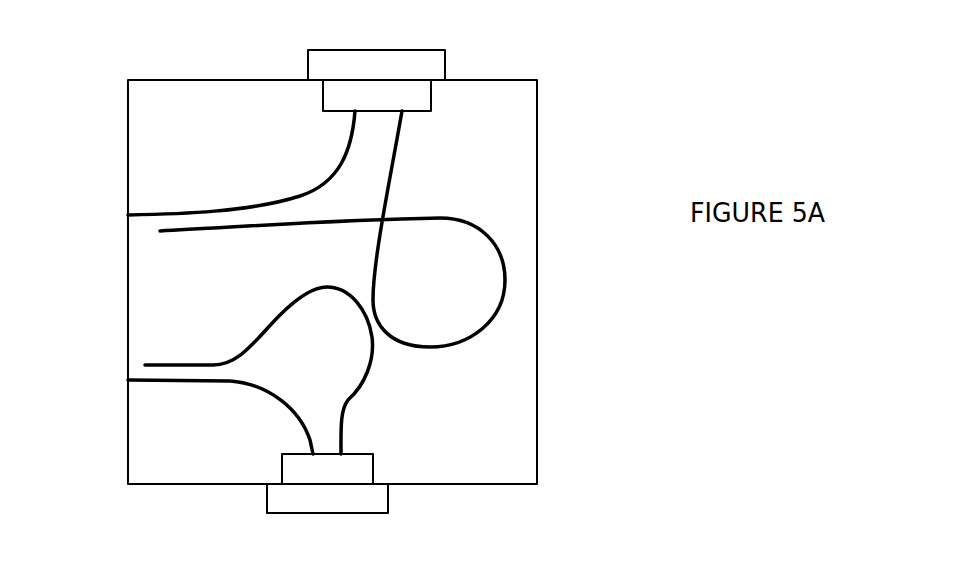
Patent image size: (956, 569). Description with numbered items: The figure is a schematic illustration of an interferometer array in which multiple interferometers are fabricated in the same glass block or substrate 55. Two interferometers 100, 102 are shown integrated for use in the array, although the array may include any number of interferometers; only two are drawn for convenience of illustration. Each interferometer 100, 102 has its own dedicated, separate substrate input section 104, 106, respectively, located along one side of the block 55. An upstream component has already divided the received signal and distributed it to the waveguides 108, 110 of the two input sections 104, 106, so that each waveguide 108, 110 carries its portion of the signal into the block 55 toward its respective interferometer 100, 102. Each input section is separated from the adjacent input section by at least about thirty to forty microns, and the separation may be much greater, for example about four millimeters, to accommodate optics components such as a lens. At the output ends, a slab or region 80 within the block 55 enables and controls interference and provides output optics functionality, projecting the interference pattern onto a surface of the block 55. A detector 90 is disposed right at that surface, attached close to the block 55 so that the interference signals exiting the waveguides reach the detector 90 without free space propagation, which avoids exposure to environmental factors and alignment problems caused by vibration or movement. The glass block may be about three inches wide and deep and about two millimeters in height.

The block 55 is at (540, 203).
The slab 80 is at (431, 97).
The detector 90 is at (355, 50).
The interferometer 100 is at (480, 150).
The interferometer 102 is at (455, 410).
The substrate input section 104 is at (183, 207).
The substrate input section 106 is at (172, 402).
The waveguide 108 is at (147, 217).
The waveguide 110 is at (140, 378).